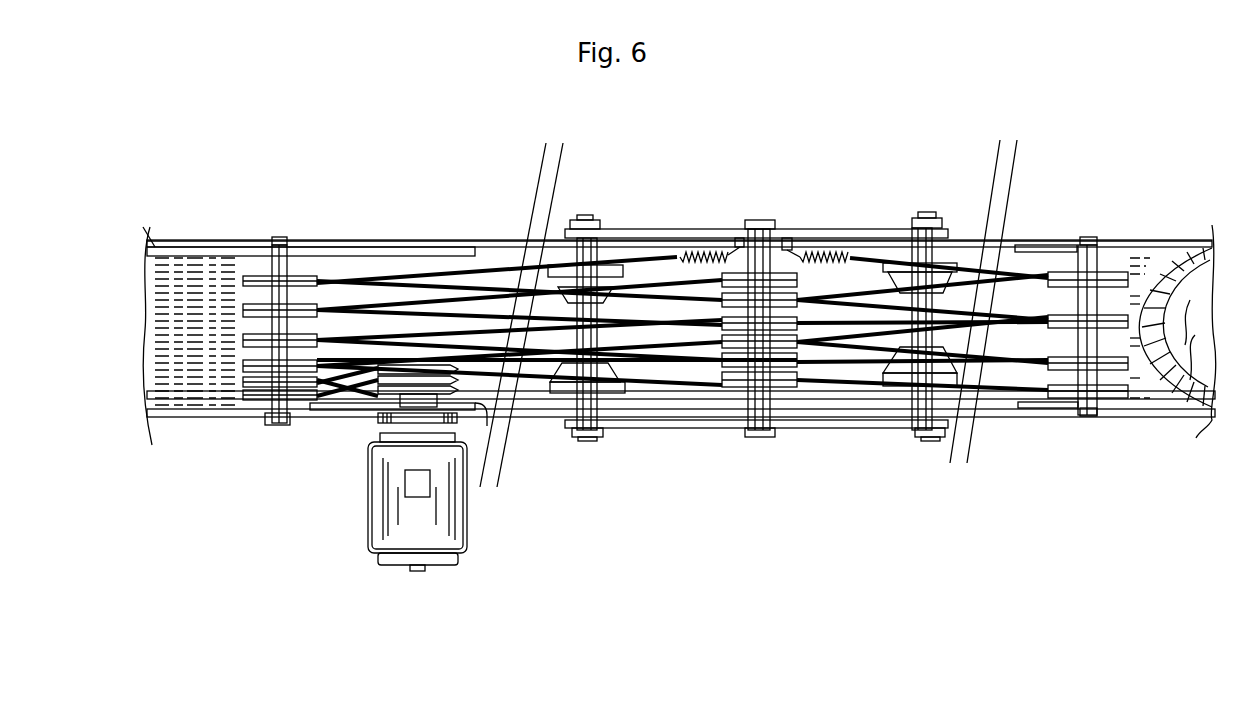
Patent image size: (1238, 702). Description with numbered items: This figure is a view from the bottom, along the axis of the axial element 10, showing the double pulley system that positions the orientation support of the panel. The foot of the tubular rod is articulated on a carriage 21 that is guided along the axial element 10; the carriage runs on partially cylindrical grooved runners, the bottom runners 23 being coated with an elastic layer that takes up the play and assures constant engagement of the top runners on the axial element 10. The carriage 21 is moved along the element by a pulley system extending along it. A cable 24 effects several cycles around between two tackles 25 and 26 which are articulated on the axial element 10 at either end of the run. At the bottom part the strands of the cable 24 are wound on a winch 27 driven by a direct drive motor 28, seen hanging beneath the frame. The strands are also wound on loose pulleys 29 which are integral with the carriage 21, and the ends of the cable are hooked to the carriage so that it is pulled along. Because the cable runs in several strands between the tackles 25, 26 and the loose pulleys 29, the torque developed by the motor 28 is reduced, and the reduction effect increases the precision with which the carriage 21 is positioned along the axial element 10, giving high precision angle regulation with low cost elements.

The axial element 10 is at (997, 404).
The carriage 21 is at (850, 429).
The bottom runners 23 is at (972, 258).
The cable 24 is at (693, 396).
The tackle 25 is at (1112, 256).
The tackle 26 is at (325, 268).
The winch 27 is at (465, 402).
The direct drive motor 28 is at (372, 528).
The loose pulleys 29 is at (798, 262).